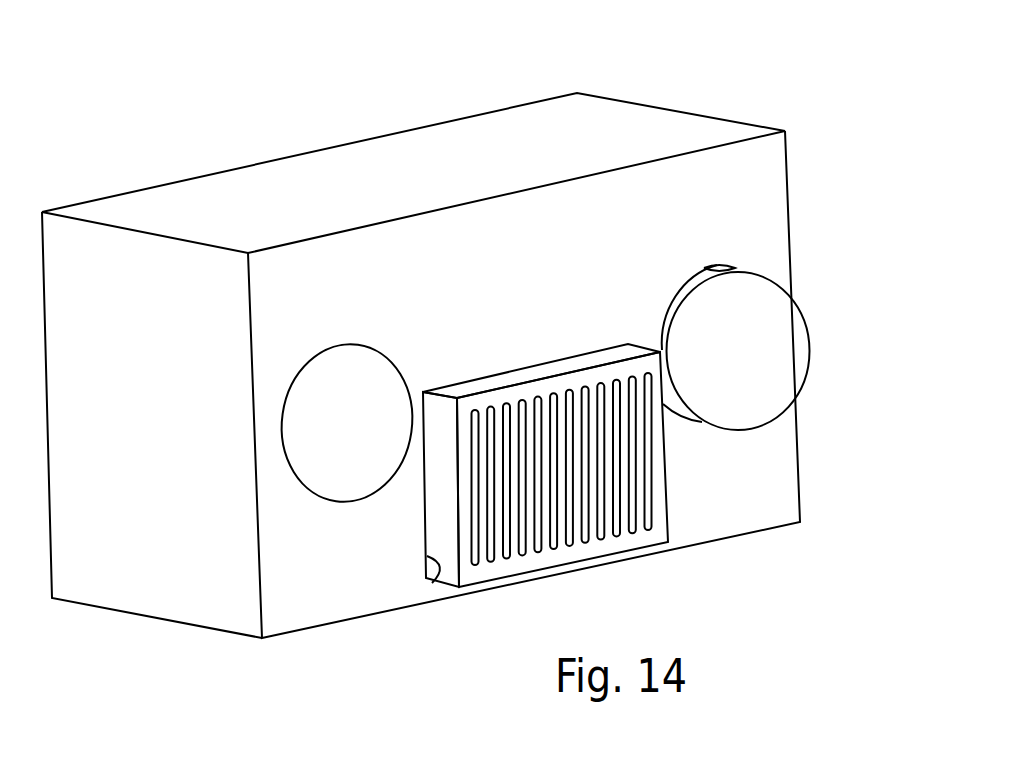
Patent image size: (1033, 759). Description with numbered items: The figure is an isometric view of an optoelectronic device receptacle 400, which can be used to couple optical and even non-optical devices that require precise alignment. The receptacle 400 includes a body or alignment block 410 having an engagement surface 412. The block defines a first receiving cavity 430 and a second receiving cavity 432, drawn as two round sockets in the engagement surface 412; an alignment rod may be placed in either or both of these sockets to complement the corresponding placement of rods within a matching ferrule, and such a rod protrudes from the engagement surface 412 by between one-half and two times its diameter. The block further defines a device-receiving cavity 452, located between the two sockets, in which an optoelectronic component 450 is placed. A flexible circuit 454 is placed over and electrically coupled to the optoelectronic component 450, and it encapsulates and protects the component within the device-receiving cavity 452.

The receptacle 400 is at (457, 324).
The alignment block 410 is at (205, 188).
The engagement surface 412 is at (775, 153).
The first receiving cavity 430 is at (377, 448).
The second receiving cavity 432 is at (735, 268).
The optoelectronic component 450 is at (512, 518).
The device-receiving cavity 452 is at (440, 583).
The flexible circuit 454 is at (580, 523).